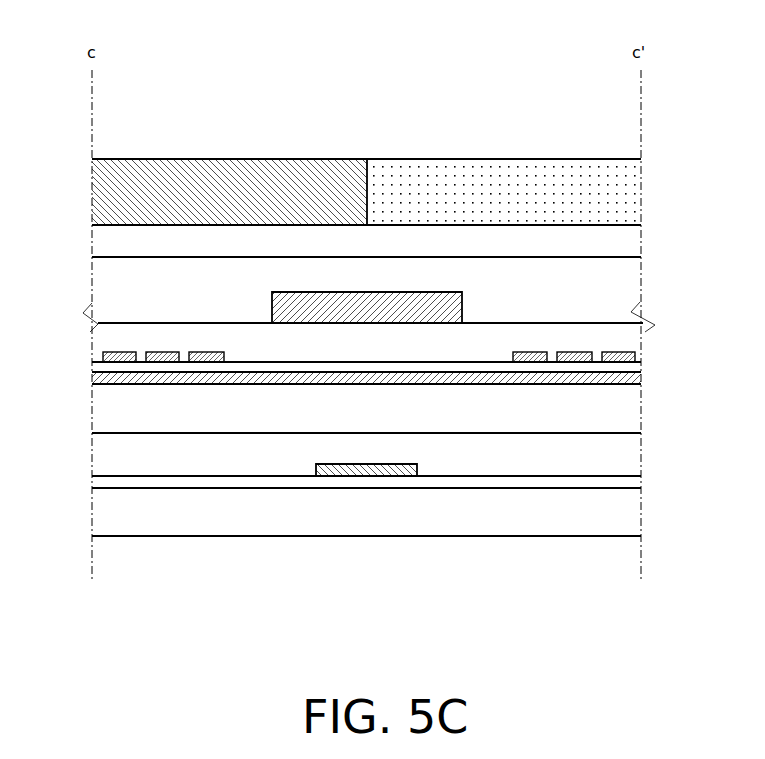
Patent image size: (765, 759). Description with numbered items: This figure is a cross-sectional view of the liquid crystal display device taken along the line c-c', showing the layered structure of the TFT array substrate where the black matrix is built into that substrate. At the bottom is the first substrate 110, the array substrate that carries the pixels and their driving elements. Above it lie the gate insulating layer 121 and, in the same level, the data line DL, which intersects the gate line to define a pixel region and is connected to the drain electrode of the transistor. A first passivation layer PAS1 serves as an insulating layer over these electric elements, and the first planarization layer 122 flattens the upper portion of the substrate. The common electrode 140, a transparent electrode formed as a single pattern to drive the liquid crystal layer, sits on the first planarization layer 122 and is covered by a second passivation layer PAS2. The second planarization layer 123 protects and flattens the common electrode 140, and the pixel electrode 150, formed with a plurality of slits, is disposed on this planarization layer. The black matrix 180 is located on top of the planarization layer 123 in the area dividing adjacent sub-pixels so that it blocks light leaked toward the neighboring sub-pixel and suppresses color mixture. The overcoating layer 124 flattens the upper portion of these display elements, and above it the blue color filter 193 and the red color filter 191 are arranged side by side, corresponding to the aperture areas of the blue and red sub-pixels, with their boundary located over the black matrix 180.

The blue color filter 193 is at (123, 195).
The red color filter 191 is at (626, 198).
The overcoating layer 124 is at (626, 238).
The second planarization layer 123 is at (113, 338).
The pixel electrode 150 is at (636, 357).
The black matrix 180 is at (310, 312).
The second passivation layer PAS2 is at (627, 367).
The common electrode 140 is at (627, 377).
The first planarization layer 122 is at (627, 416).
The first passivation layer PAS1 is at (627, 454).
The gate insulating layer 121 is at (627, 478).
The first substrate 110 is at (627, 513).
The data line DL is at (375, 470).